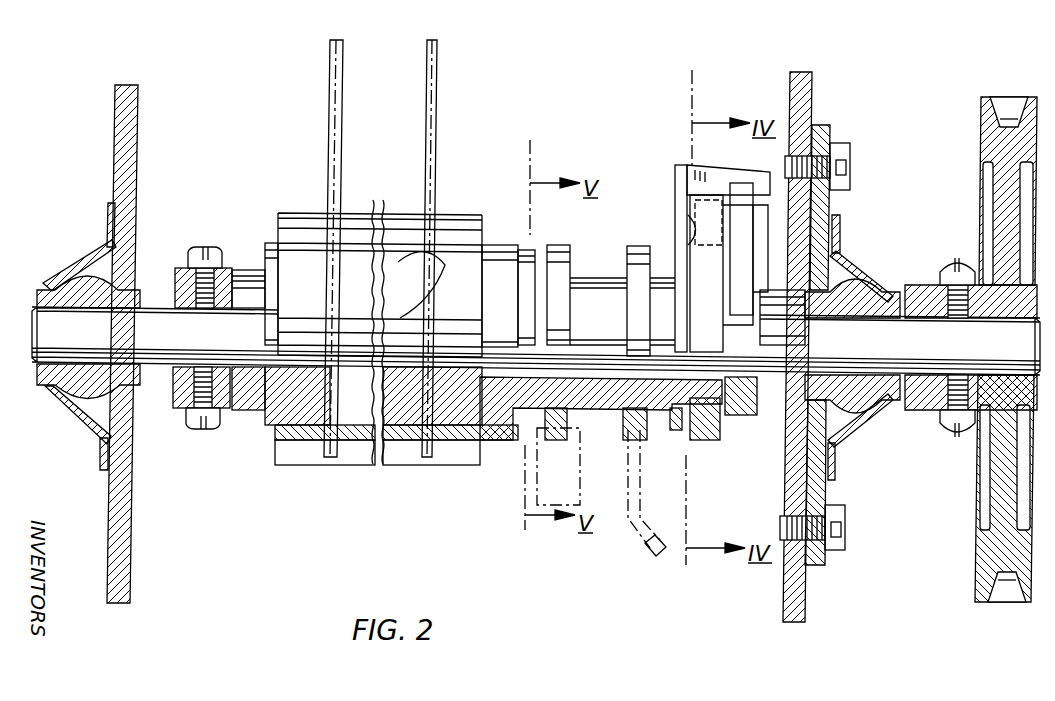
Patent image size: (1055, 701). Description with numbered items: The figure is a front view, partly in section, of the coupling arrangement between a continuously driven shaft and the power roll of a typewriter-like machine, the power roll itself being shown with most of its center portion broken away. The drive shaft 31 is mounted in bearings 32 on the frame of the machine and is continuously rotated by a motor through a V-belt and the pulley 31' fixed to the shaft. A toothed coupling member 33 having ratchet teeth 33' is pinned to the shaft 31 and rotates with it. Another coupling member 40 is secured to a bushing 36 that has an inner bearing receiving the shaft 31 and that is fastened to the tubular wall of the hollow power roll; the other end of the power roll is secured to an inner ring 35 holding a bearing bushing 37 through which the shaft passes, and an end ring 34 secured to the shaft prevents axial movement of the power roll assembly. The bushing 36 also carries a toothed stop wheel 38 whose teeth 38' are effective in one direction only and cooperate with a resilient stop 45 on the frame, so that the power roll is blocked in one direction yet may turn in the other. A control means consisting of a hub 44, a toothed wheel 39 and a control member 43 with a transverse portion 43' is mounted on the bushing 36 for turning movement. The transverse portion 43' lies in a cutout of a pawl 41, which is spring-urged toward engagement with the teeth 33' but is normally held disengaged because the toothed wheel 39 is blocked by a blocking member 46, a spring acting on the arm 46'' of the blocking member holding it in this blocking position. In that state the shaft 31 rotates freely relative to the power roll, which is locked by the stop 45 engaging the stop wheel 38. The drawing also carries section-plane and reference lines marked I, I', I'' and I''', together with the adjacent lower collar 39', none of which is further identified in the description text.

The drive shaft 31 is at (536, 321).
The pulley 31' is at (974, 349).
The bearings 32 is at (63, 417).
The toothed coupling member 33 is at (830, 345).
The ratchet teeth 33' is at (747, 420).
The end ring 34 is at (180, 400).
The inner ring 35 is at (268, 420).
The bushing 36 is at (586, 400).
The bearing bushing 37 is at (247, 402).
The toothed stop wheel 38 is at (559, 279).
The teeth 38' is at (527, 456).
The toothed wheel 39 is at (624, 294).
The lower collar 39' is at (621, 447).
The coupling member 40 is at (710, 438).
The pawl 41 is at (745, 256).
The control member 43 is at (662, 258).
The transverse portion 43' is at (733, 166).
The hub 44 is at (664, 290).
The resilient stop 45 is at (549, 492).
The blocking member 46 is at (653, 489).
The arm 46'' is at (644, 574).
The line I is at (431, 472).
The line I' is at (417, 272).
The line I'' is at (325, 272).
The line I''' is at (414, 250).